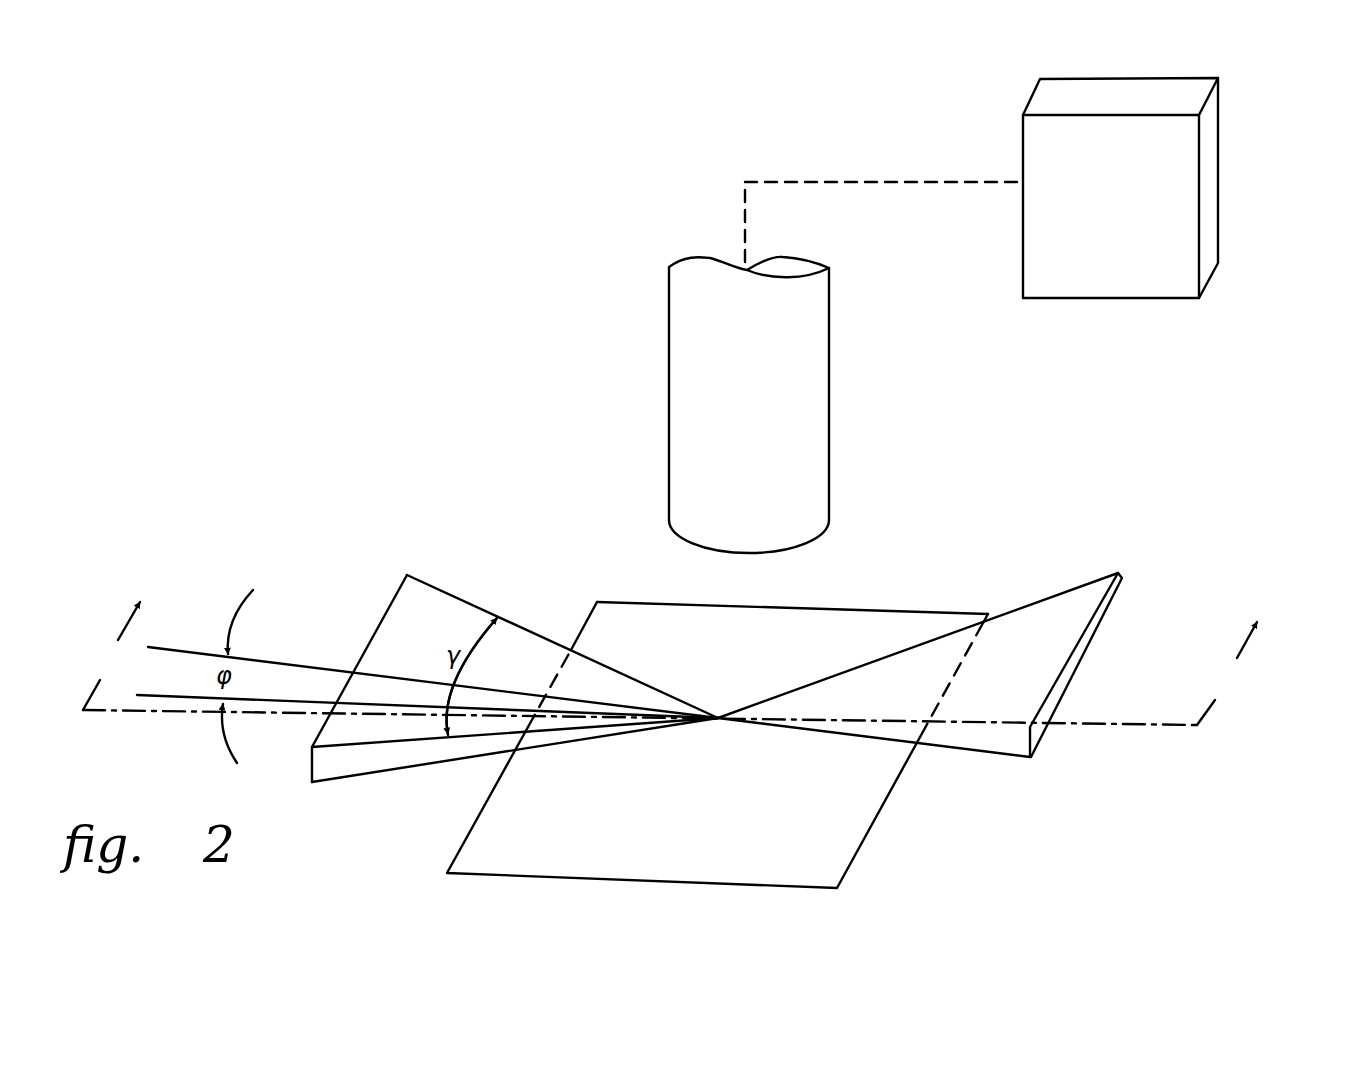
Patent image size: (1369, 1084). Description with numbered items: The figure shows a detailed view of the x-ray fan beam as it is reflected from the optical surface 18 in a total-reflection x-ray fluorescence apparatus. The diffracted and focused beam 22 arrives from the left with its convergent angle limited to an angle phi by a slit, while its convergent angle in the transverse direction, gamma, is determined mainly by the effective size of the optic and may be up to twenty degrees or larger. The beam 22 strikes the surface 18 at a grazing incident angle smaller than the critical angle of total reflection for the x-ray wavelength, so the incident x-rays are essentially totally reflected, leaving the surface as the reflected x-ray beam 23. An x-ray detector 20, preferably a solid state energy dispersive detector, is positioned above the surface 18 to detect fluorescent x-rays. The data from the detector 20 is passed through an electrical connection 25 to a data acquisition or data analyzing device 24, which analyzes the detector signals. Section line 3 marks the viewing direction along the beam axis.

The optical surface 18 is at (837, 840).
The x-ray detector 20 is at (813, 390).
The diffracted beam 22 is at (430, 593).
The reflected x-ray beam 23 is at (1055, 595).
The data analyzing device 24 is at (1209, 158).
The electrical connection 25 is at (897, 178).
The section line for FIG. 3 is at (670, 663).